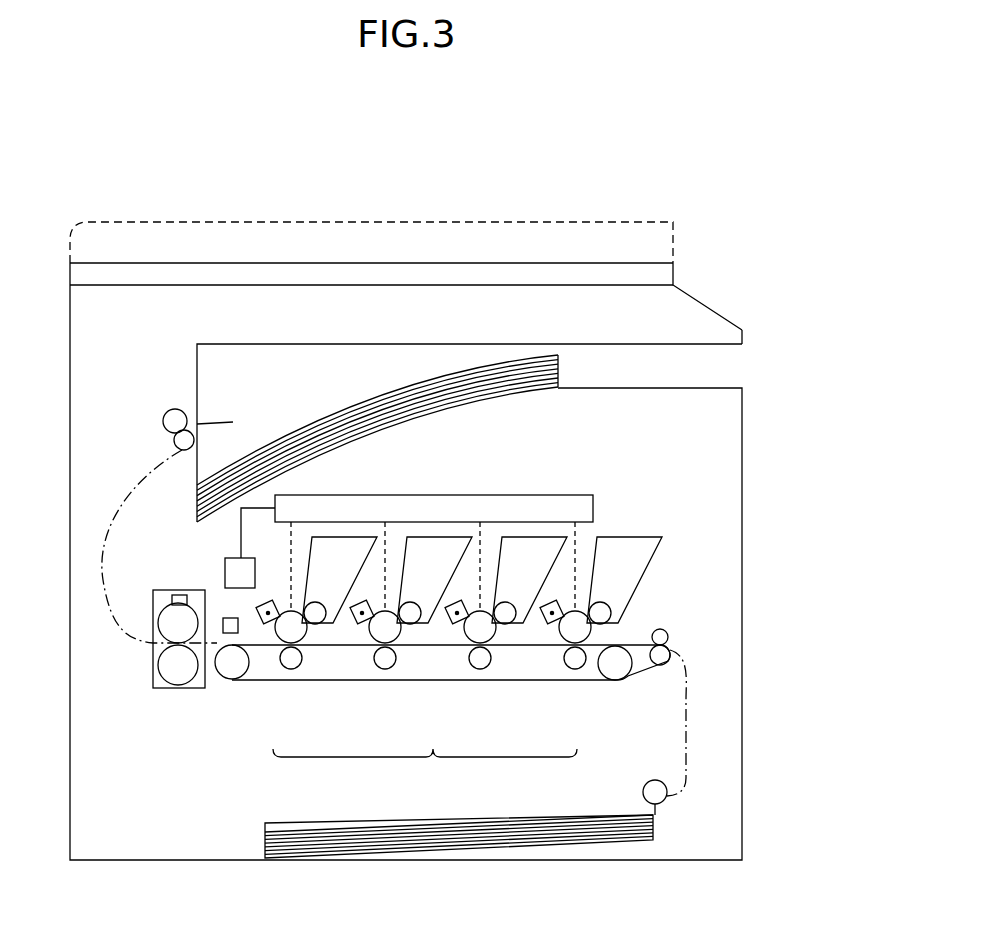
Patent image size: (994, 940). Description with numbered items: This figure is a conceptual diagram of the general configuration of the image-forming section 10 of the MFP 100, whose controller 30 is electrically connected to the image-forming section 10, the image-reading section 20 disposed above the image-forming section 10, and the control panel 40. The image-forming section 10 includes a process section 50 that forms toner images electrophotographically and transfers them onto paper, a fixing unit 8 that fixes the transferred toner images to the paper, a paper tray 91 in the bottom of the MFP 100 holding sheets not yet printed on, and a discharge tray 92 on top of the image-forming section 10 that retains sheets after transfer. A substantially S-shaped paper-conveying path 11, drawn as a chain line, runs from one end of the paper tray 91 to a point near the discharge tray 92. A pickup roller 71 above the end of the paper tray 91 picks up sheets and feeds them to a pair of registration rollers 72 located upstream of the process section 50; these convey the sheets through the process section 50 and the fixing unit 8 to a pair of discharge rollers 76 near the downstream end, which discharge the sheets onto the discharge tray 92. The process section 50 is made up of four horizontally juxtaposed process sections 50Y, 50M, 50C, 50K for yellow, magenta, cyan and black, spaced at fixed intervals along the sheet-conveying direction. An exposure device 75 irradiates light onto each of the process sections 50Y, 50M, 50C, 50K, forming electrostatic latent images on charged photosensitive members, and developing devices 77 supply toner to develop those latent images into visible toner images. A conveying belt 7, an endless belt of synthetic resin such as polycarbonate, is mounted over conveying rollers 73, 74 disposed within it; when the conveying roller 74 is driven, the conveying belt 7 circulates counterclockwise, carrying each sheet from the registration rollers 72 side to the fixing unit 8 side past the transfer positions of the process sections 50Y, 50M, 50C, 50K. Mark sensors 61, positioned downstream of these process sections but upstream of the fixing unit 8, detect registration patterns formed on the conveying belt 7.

The MFP 100 is at (602, 191).
The image-forming section 10 is at (700, 443).
The image-reading section 20 is at (167, 221).
The control panel 40 is at (713, 307).
The discharge tray 92 is at (350, 415).
The discharge rollers 76 is at (172, 410).
The exposure device 75 is at (540, 495).
The developing devices 77 is at (342, 537).
The controller 30 is at (227, 566).
The mark sensors 61 is at (229, 618).
The process section for yellow 50Y is at (286, 677).
The process section for magenta 50M is at (375, 677).
The process section for cyan 50C is at (470, 677).
The process section for black 50K is at (561, 677).
The process section 50 is at (425, 768).
The conveying belt 7 is at (265, 683).
The conveying roller 74 is at (229, 670).
The conveying roller 73 is at (620, 673).
The registration rollers 72 is at (663, 629).
The fixing unit 8 is at (178, 690).
The paper-conveying path 11 is at (691, 705).
The pickup roller 71 is at (643, 791).
The paper tray 91 is at (490, 838).